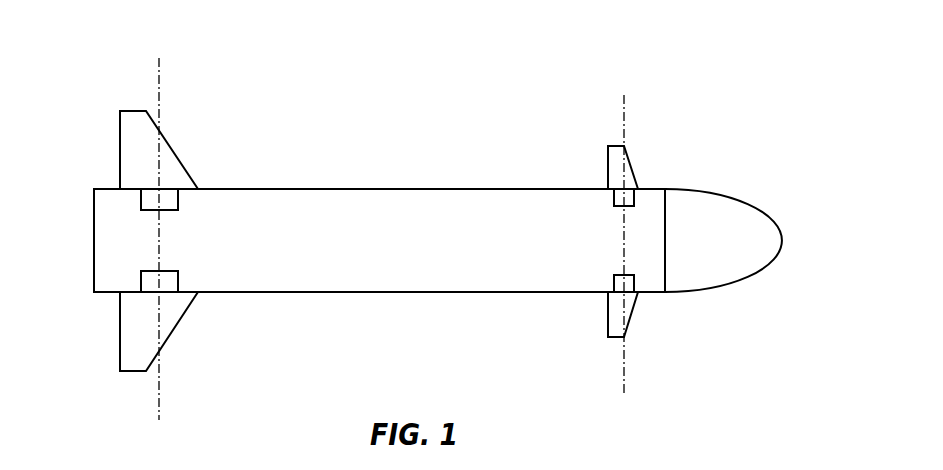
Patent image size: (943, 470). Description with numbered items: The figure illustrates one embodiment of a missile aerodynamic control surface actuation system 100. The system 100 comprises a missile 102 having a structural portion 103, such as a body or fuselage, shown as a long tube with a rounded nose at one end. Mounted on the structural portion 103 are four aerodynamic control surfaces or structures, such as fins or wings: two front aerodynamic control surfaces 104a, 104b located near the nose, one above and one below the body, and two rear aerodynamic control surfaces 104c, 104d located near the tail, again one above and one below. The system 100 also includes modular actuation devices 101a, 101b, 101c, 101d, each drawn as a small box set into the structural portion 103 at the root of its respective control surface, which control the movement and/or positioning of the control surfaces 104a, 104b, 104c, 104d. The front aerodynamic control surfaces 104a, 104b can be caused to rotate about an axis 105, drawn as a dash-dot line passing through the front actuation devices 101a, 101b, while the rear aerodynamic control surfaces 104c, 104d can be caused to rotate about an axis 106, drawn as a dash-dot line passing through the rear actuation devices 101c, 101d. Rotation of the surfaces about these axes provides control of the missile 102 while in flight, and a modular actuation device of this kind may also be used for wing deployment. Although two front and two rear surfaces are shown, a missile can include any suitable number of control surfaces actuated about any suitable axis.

The missile aerodynamic control surface actuation system 100 is at (730, 78).
The modular actuation device 101a is at (614, 198).
The modular actuation device 101b is at (614, 280).
The modular actuation device 101c is at (178, 202).
The modular actuation device 101d is at (178, 286).
The missile 102 is at (384, 143).
The structural portion 103 is at (448, 189).
The front aerodynamic control surface 104a is at (632, 168).
The front aerodynamic control surface 104b is at (633, 310).
The rear aerodynamic control surface 104c is at (176, 155).
The rear aerodynamic control surface 104d is at (175, 328).
The axis 105 is at (625, 111).
The axis 106 is at (160, 83).